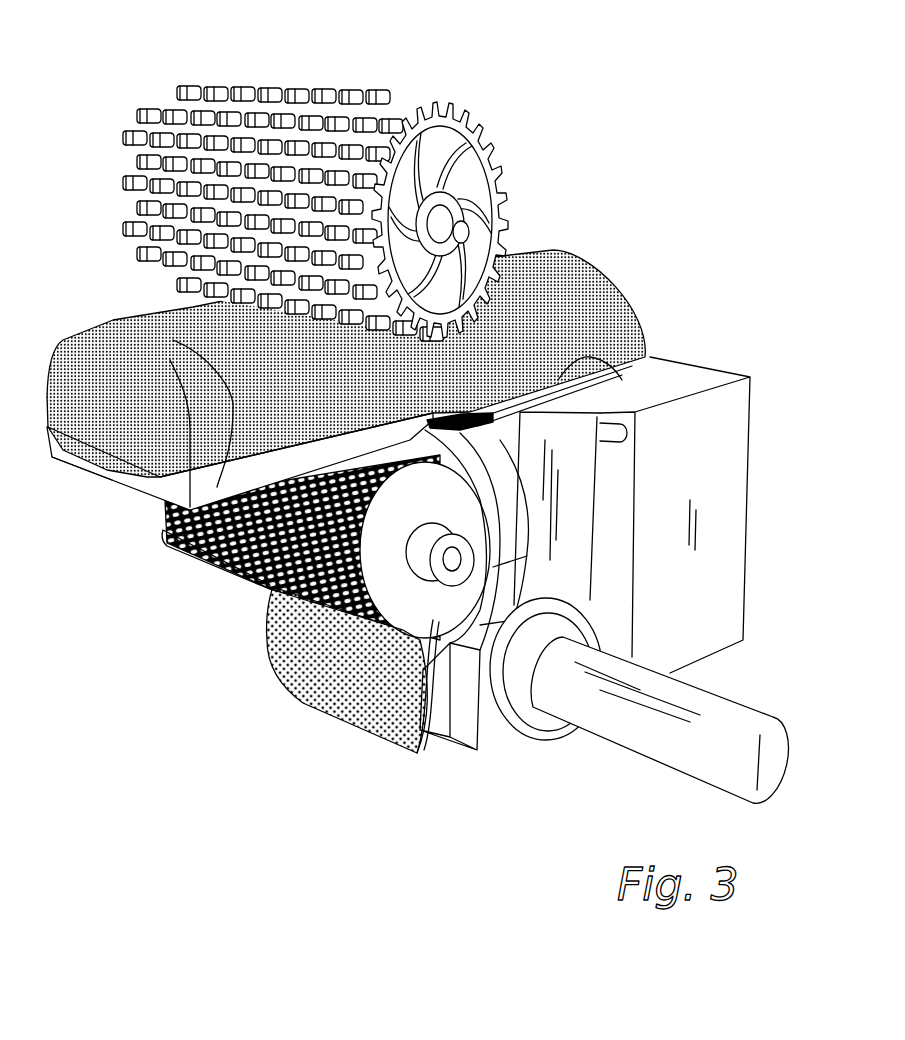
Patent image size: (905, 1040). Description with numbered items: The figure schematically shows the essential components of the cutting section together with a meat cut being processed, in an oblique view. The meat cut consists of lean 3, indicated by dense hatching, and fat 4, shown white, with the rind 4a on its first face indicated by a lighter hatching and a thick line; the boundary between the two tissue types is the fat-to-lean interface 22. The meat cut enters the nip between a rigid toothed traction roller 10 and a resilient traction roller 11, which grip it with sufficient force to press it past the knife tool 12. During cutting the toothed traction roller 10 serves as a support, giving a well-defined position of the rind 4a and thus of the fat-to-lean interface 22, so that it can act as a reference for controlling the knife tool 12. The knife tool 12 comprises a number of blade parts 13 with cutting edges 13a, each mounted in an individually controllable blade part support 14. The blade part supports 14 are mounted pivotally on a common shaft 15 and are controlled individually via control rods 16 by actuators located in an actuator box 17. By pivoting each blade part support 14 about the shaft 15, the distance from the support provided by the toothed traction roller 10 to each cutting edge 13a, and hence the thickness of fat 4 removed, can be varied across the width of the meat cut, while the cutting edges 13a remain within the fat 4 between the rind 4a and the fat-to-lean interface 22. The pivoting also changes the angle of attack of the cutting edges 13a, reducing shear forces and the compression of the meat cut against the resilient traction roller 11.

The lean 3 is at (623, 320).
The fat 4 is at (165, 340).
The rind 4a is at (330, 697).
The toothed traction roller 10 is at (237, 573).
The resilient traction roller 11 is at (383, 97).
The knife tool 12 is at (475, 418).
The blade part 13 is at (467, 416).
The cutting edge 13a is at (177, 340).
The blade part support 14 is at (600, 553).
The shaft 15 is at (770, 765).
The control rod 16 is at (615, 435).
The actuator box 17 is at (728, 535).
The fat-to-lean interface 22 is at (112, 472).